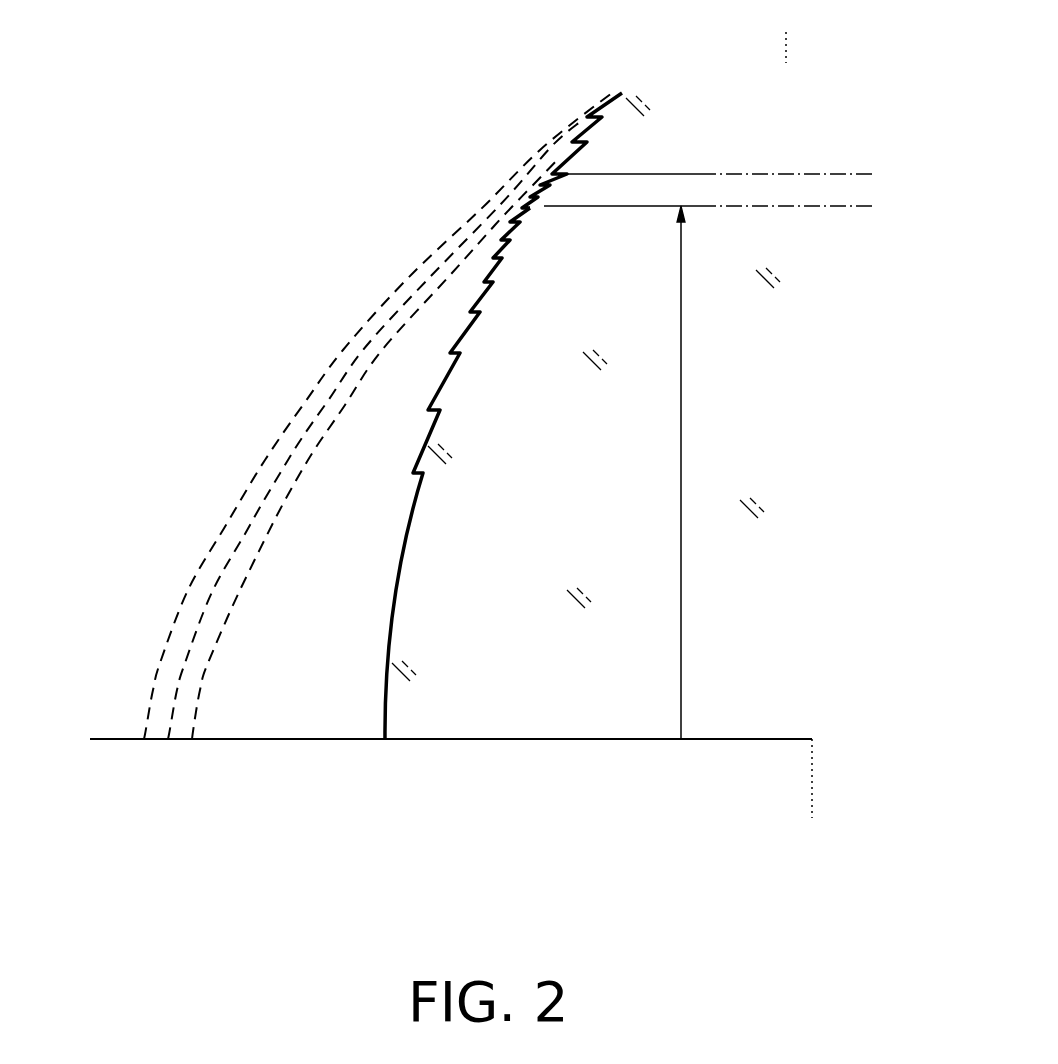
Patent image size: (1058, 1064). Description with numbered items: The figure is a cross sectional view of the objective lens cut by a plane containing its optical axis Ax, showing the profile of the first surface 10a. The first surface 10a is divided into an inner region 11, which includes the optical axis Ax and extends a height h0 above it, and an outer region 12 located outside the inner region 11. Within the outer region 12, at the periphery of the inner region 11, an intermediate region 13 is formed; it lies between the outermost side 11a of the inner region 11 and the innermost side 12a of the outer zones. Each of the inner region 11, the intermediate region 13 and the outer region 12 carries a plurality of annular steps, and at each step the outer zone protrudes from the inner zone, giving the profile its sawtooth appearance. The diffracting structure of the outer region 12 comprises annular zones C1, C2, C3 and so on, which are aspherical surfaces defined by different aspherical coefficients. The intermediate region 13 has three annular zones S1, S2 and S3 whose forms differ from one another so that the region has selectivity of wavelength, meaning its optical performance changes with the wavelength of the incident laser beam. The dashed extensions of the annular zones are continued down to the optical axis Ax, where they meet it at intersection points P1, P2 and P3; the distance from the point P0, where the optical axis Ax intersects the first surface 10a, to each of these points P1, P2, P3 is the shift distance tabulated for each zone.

The first surface 10a is at (372, 63).
The inner region 11 is at (812, 207).
The outer region 12 is at (794, 207).
The intermediate region 13 is at (804, 175).
The outermost side of the inner region 11a is at (733, 208).
The innermost side of the zones 12a is at (745, 177).
The height of first portion h0 is at (702, 472).
The optical axis Ax is at (432, 740).
The annular step C1 is at (557, 160).
The annular step C2 is at (578, 122).
The annular step C3 is at (607, 95).
The annular zone S1 is at (537, 203).
The annular zone S2 is at (524, 198).
The annular zone S3 is at (545, 188).
The intersection point P0 is at (385, 739).
The intersection point P1 is at (192, 739).
The intersection point P2 is at (168, 739).
The intersection point P3 is at (144, 739).